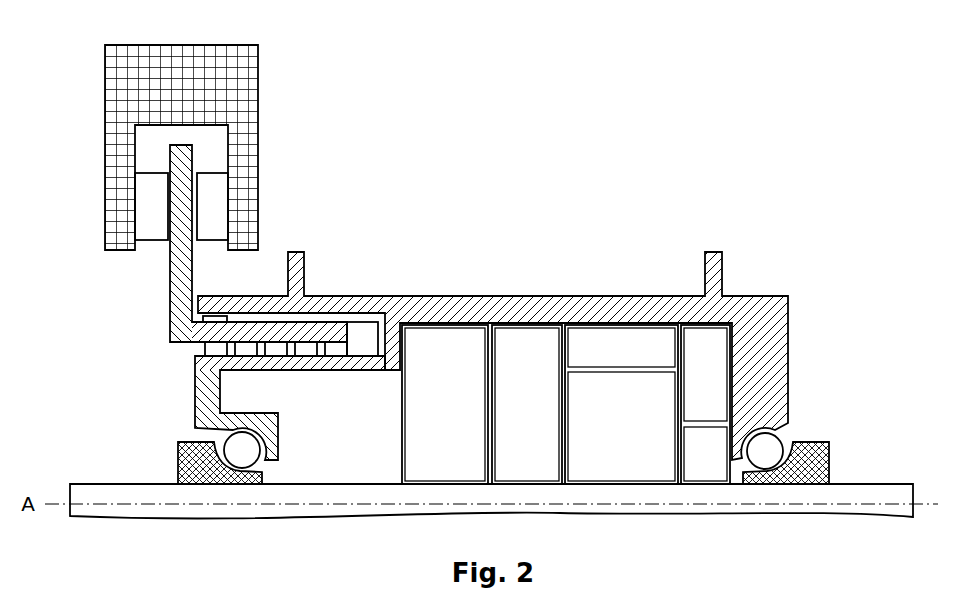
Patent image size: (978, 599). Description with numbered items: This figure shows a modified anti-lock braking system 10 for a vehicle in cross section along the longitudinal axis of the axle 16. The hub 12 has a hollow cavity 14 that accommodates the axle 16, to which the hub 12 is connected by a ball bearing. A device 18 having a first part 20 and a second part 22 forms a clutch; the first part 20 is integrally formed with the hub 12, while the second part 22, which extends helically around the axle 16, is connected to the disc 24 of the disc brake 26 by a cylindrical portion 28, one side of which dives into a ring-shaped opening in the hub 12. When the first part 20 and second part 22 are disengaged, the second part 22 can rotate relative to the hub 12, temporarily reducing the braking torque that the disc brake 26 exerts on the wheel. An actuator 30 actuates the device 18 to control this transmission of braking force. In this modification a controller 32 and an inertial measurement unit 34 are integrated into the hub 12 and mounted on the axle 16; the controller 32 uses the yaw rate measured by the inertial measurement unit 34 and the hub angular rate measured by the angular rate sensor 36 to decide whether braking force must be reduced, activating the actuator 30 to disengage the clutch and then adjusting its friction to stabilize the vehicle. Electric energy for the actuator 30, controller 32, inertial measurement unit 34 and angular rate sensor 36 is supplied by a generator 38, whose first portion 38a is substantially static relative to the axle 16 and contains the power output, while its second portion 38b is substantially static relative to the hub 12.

The anti-lock braking system 10 is at (573, 56).
The hub 12 is at (575, 296).
The hollow cavity 14 is at (491, 481).
The axle 16 is at (148, 483).
The device 18 is at (155, 390).
The first part 20 is at (282, 370).
The second part 22 is at (180, 356).
The disc 24 is at (170, 283).
The disc brake 26 is at (296, 109).
The cylindrical portion 28 is at (255, 322).
The actuator 30 is at (367, 322).
The controller 32 is at (445, 404).
The inertial measurement unit 34 is at (527, 404).
The angular rate sensor 36 is at (705, 404).
The generator 38 is at (653, 232).
The first portion 38a is at (621, 426).
The second portion 38b is at (621, 347).